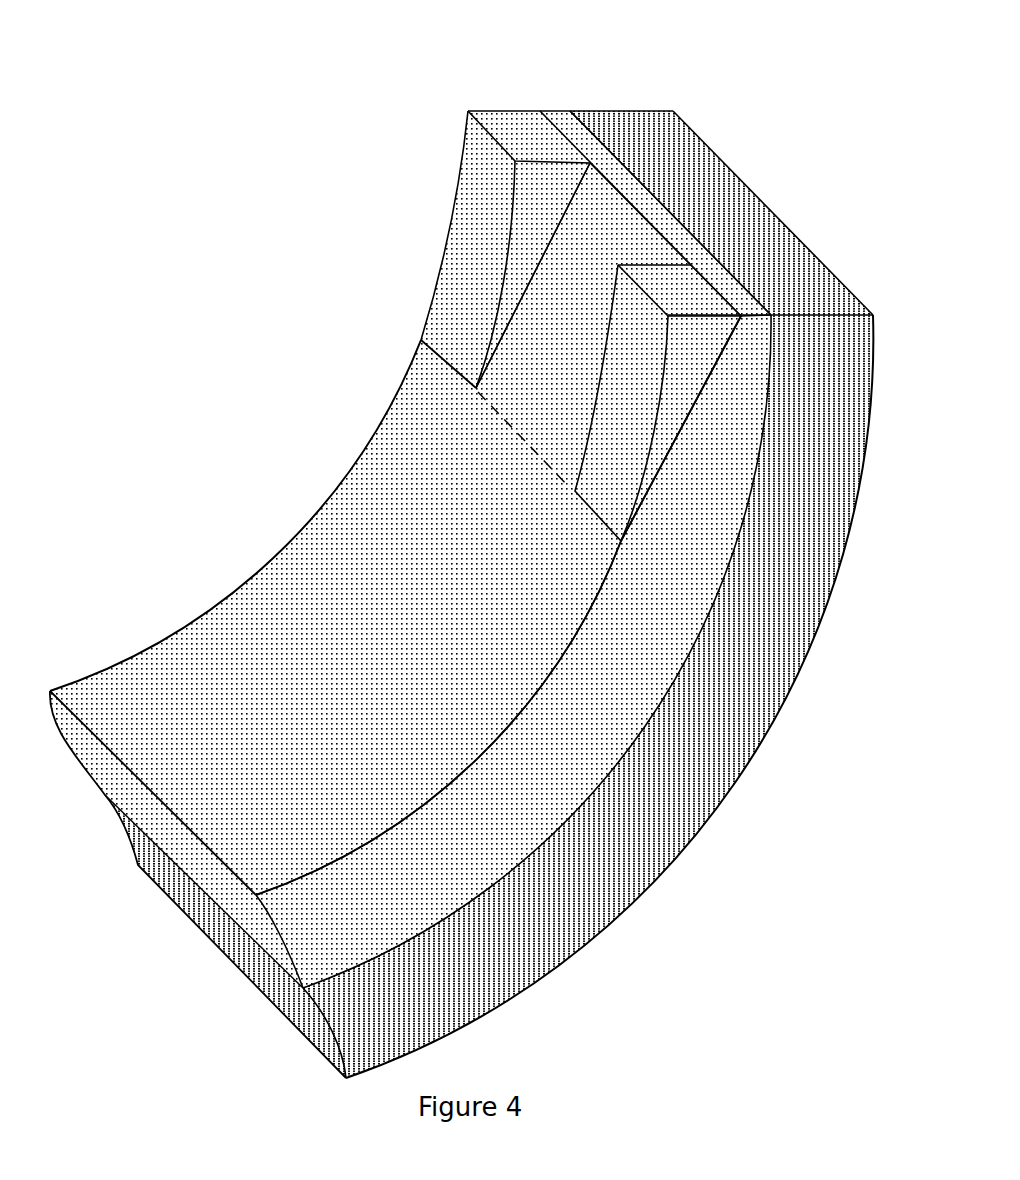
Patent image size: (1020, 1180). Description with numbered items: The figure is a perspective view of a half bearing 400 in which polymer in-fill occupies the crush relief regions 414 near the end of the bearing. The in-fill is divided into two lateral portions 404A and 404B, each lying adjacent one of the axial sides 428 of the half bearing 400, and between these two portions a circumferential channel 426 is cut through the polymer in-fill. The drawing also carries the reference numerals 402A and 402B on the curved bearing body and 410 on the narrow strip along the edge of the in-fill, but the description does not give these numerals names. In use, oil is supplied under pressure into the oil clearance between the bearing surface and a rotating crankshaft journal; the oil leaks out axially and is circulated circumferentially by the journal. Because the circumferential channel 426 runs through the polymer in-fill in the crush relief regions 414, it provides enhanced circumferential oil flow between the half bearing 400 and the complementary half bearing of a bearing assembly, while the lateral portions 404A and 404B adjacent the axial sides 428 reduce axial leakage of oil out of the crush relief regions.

The half bearing 400 is at (683, 953).
The first inner surface portion 402A is at (357, 560).
The second surface portion 402B is at (662, 788).
The lateral portion of polymer in-fill 404A is at (463, 235).
The lateral portion of polymer in-fill 404B is at (690, 290).
The channel strip 410 is at (609, 118).
The crush relief region 414 is at (682, 457).
The circumferential channel 426 is at (593, 230).
The axial side 428 is at (217, 570).